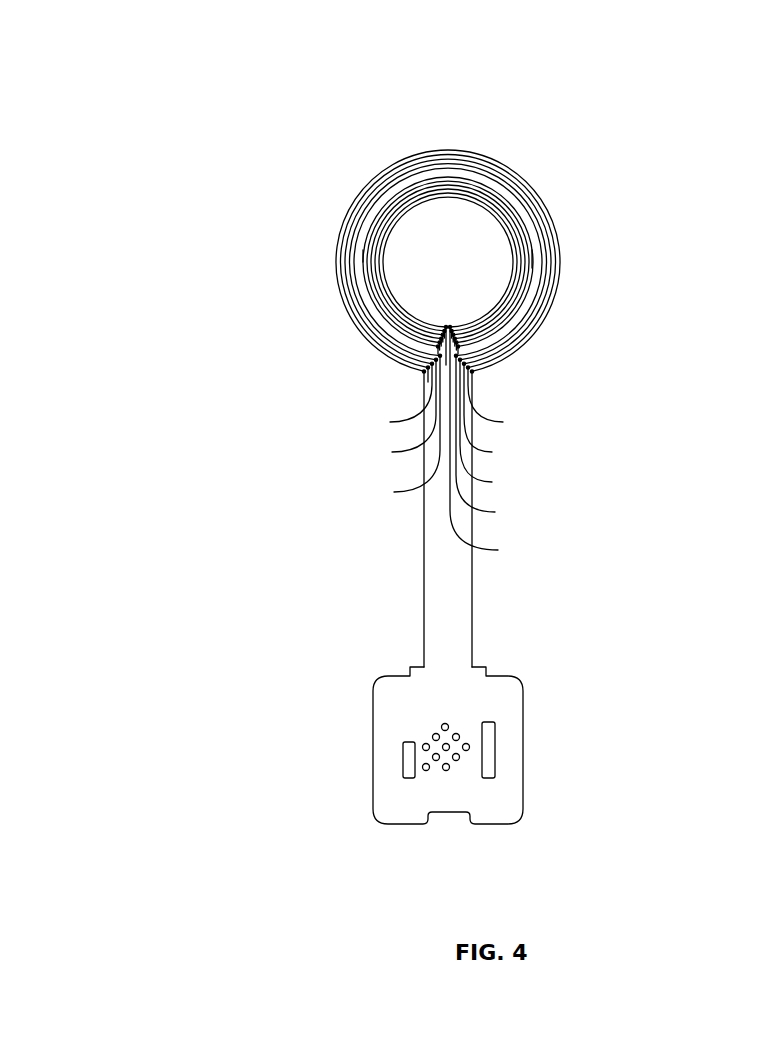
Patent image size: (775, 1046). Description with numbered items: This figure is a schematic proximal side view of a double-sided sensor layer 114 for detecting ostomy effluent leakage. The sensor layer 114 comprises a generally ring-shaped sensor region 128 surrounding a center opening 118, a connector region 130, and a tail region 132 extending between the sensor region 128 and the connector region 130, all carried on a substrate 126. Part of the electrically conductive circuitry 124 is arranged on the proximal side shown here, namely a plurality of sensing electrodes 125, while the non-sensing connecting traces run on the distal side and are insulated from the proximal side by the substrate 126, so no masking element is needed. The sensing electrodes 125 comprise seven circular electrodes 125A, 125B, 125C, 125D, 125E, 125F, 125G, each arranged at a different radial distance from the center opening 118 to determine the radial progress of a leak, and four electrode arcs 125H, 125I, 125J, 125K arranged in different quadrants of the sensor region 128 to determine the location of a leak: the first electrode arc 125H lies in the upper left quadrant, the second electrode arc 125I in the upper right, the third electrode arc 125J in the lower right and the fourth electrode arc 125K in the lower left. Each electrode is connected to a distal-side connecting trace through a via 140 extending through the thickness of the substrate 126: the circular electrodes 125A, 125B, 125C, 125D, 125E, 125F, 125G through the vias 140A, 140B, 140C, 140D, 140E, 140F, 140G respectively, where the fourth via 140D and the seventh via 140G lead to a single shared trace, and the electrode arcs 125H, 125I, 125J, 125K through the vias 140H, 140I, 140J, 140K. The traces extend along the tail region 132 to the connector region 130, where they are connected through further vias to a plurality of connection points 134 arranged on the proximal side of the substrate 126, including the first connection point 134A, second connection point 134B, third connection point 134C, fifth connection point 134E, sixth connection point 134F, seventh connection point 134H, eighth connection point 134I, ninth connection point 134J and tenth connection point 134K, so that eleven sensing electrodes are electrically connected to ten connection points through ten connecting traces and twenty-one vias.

The double-sided sensor layer 114 is at (230, 78).
The center opening 118 is at (517, 173).
The electrically conductive circuitry 124 is at (483, 205).
The sensing electrodes 125 is at (408, 186).
The first circular electrode 125A is at (373, 252).
The second circular electrode 125B is at (370, 238).
The third circular electrode 125C is at (375, 213).
The fourth circular electrode 125D is at (542, 283).
The fifth circular electrode 125E is at (540, 303).
The sixth circular electrode 125F is at (530, 330).
The seventh circular electrode 125G is at (520, 348).
The first electrode arc 125H is at (405, 183).
The second electrode arc 125I is at (525, 215).
The third electrode arc 125J is at (540, 262).
The fourth electrode arc 125K is at (367, 303).
The substrate 126 is at (452, 173).
The sensor region 128 is at (228, 150).
The connector region 130 is at (228, 665).
The tail region 132 is at (228, 383).
The connection points 134 is at (461, 698).
The first connection point 134A is at (445, 723).
The second connection point 134B is at (443, 749).
The third connection point 134C is at (458, 734).
The fifth connection point 134E is at (459, 757).
The sixth connection point 134F is at (449, 768).
The seventh connection point 134H is at (426, 743).
The eighth connection point 134I is at (469, 746).
The ninth connection point 134J is at (434, 760).
The tenth connection point 134K is at (436, 733).
The vias 140 is at (486, 378).
The first via 140A is at (502, 444).
The second via 140B is at (387, 428).
The third via 140C is at (503, 438).
The fourth via 140D is at (426, 372).
The fifth via 140E is at (505, 412).
The sixth via 140F is at (512, 399).
The seventh via 140G is at (382, 397).
The eighth via 140H is at (363, 257).
The ninth via 140I is at (532, 263).
The tenth via 140J is at (499, 425).
The eleventh via 140K is at (384, 410).